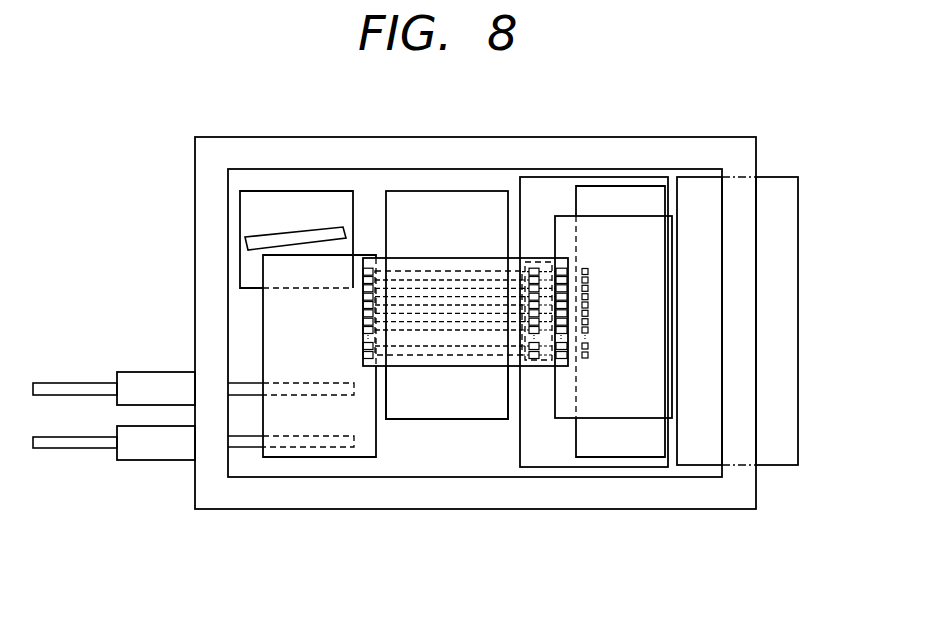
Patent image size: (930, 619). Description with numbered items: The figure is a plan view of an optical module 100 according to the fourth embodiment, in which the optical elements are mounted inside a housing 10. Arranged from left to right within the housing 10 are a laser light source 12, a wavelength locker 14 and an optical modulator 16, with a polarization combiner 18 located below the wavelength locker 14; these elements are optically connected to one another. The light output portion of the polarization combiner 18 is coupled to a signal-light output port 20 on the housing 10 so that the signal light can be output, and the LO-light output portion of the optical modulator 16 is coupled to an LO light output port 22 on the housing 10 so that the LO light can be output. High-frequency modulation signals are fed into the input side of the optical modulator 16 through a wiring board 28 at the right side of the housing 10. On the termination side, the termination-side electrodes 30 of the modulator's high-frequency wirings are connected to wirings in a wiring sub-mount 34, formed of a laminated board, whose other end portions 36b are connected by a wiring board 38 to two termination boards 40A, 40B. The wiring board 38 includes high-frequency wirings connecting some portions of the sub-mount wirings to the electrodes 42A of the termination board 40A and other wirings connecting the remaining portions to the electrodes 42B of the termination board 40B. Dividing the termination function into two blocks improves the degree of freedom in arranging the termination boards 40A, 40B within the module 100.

The optical module 100 is at (672, 517).
The housing 10 is at (357, 137).
The laser light source 12 is at (291, 191).
The wavelength locker 14 is at (417, 191).
The optical modulator 16 is at (637, 186).
The polarization combiner 18 is at (453, 419).
The signal-light output port 20 is at (147, 372).
The LO light output port 22 is at (136, 462).
The wiring board 28 is at (775, 466).
The termination-side electrodes 30 is at (588, 266).
The wiring sub-mount 34 is at (540, 262).
The other end portions of wirings 36b is at (532, 366).
The wiring board 38 is at (483, 258).
The termination board 40A is at (318, 457).
The termination board 40B is at (635, 418).
The electrodes of termination board 40A 42A is at (370, 360).
The electrodes of termination board 40B 42B is at (567, 368).